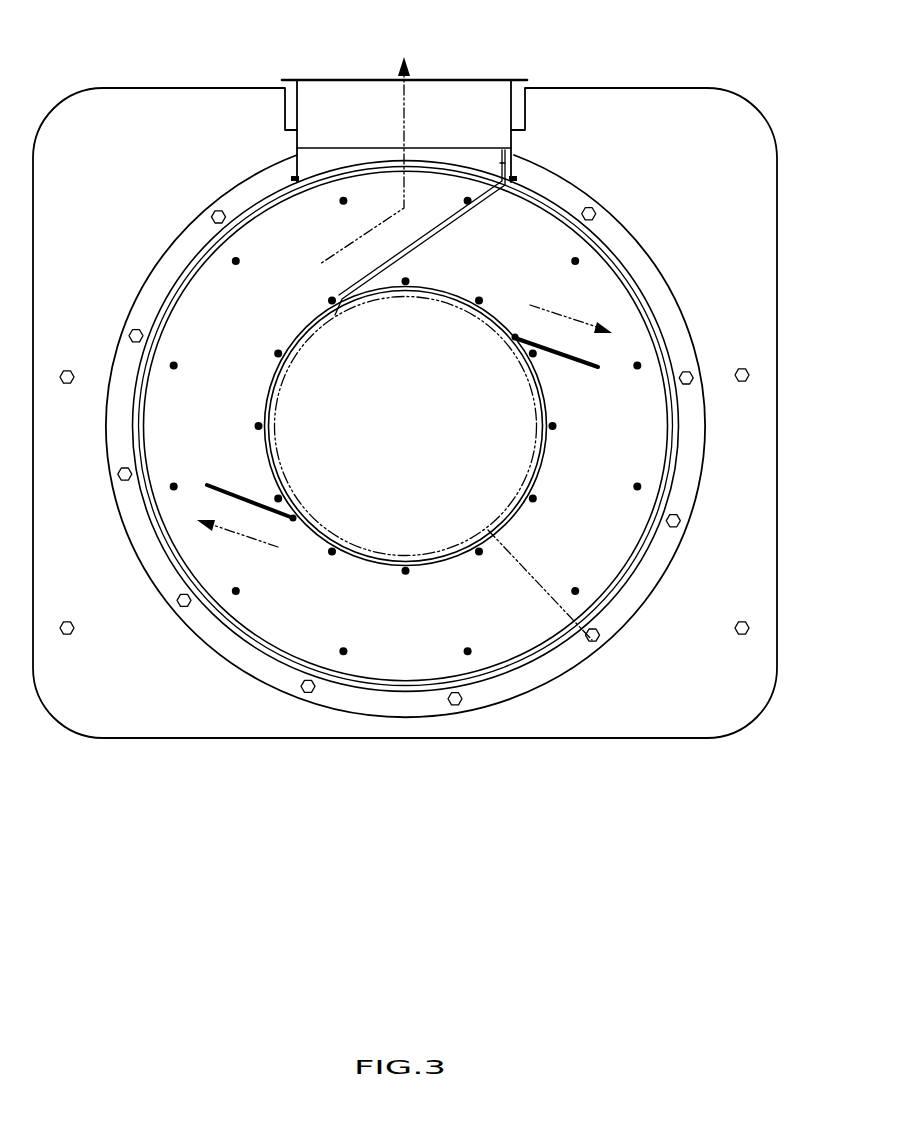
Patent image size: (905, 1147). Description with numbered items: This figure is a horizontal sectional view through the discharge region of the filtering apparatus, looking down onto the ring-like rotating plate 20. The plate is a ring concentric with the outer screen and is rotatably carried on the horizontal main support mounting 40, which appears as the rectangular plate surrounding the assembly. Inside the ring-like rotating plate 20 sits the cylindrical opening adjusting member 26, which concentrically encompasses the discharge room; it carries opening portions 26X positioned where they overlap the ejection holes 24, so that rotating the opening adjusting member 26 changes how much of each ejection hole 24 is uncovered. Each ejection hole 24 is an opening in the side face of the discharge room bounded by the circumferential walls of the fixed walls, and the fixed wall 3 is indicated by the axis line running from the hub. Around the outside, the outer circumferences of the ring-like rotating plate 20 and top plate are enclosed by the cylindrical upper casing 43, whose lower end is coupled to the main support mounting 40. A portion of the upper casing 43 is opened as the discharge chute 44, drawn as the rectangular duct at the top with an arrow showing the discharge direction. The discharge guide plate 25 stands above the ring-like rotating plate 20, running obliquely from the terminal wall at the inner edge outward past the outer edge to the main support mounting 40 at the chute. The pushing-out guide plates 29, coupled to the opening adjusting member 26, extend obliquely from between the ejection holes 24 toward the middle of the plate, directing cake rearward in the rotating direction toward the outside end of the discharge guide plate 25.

The main support mounting 40 is at (200, 107).
The discharge chute 44 is at (353, 92).
The ring-like rotating plate 20 is at (205, 308).
The upper casing 43 is at (607, 248).
The opening adjusting member 26 is at (320, 537).
The opening portion 26X is at (268, 400).
The ejection hole 24 is at (258, 455).
The discharge guide plate 25 is at (435, 235).
The pushing-out guide plate 29 is at (597, 357).
The fixed wall 3 is at (475, 365).